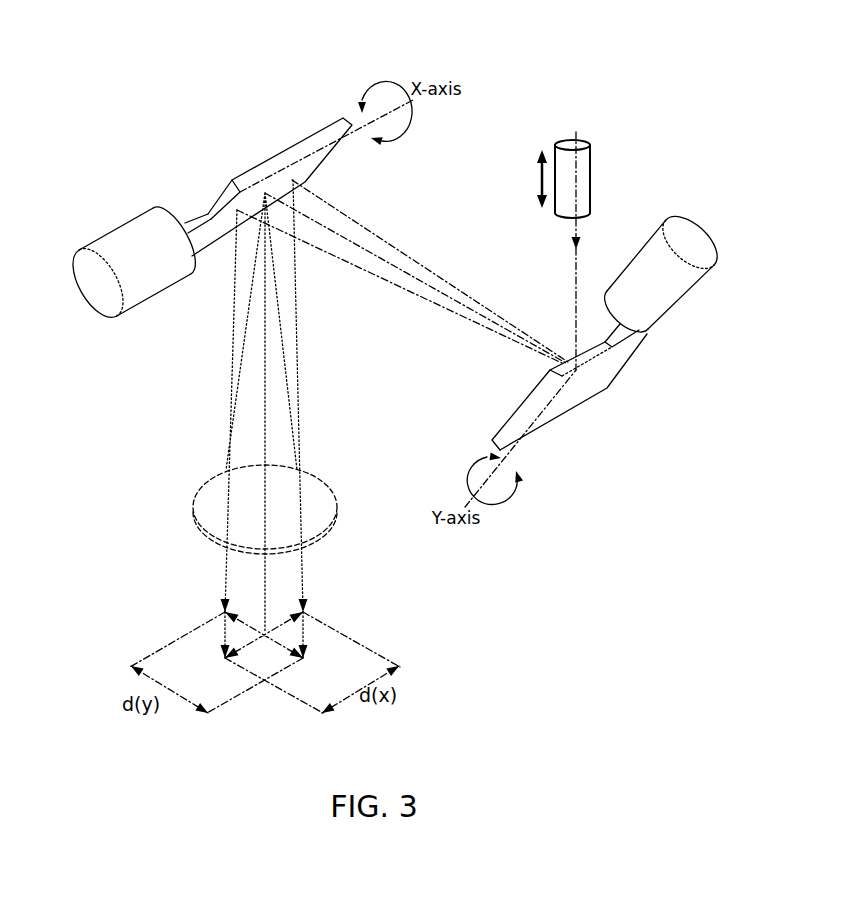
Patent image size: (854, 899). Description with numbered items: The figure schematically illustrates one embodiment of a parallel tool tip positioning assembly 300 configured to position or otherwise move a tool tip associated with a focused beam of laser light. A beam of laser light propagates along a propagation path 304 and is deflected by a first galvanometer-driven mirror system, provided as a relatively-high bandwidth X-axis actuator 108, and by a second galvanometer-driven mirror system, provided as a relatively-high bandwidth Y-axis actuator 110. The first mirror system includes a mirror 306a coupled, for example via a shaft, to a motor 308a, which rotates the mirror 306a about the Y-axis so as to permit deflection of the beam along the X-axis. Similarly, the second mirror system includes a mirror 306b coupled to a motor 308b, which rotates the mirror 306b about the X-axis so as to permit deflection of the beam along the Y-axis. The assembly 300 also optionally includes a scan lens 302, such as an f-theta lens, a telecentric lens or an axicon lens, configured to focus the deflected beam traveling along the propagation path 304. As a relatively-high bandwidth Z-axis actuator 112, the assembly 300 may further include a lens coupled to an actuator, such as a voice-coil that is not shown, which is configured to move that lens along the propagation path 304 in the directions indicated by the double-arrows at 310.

The parallel tool tip positioning assembly 300 is at (600, 80).
The Y-axis actuator 110 is at (62, 160).
The mirror 306b is at (260, 163).
The motor 308b is at (118, 232).
The X-axis actuator 108 is at (625, 435).
The mirror 306a is at (590, 391).
The motor 308a is at (677, 308).
The Z-axis actuator 112 is at (592, 168).
The double-arrows 310 is at (540, 183).
The propagation path 304 is at (568, 293).
The scan lens 302 is at (323, 530).